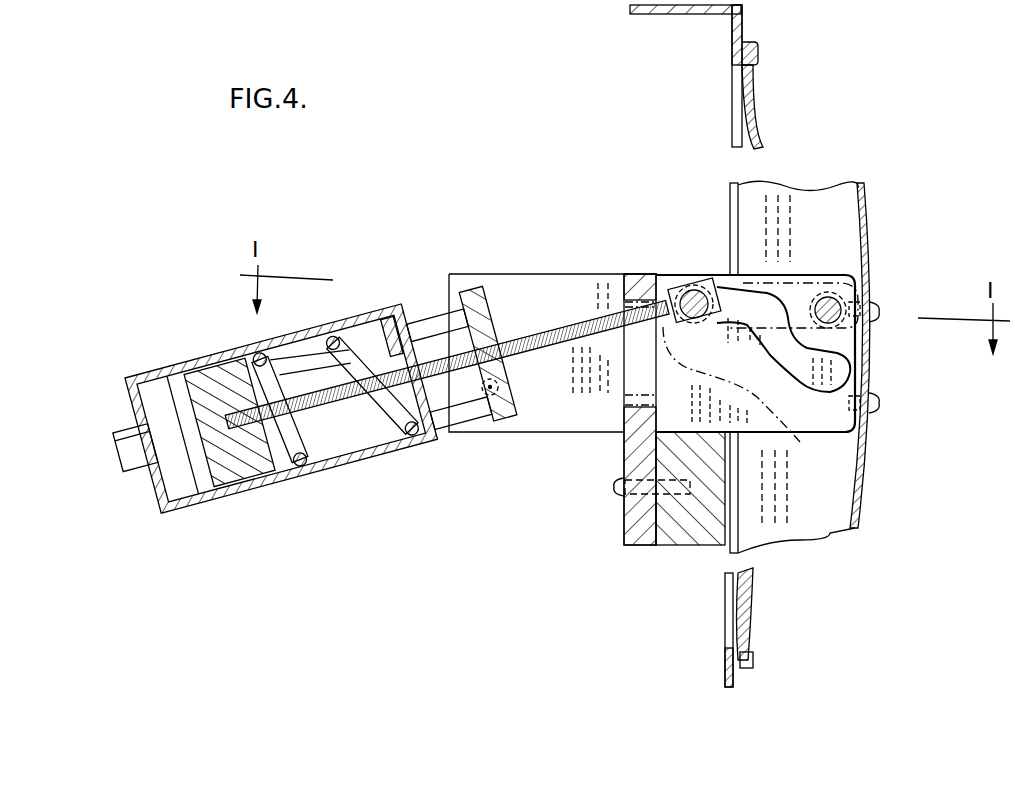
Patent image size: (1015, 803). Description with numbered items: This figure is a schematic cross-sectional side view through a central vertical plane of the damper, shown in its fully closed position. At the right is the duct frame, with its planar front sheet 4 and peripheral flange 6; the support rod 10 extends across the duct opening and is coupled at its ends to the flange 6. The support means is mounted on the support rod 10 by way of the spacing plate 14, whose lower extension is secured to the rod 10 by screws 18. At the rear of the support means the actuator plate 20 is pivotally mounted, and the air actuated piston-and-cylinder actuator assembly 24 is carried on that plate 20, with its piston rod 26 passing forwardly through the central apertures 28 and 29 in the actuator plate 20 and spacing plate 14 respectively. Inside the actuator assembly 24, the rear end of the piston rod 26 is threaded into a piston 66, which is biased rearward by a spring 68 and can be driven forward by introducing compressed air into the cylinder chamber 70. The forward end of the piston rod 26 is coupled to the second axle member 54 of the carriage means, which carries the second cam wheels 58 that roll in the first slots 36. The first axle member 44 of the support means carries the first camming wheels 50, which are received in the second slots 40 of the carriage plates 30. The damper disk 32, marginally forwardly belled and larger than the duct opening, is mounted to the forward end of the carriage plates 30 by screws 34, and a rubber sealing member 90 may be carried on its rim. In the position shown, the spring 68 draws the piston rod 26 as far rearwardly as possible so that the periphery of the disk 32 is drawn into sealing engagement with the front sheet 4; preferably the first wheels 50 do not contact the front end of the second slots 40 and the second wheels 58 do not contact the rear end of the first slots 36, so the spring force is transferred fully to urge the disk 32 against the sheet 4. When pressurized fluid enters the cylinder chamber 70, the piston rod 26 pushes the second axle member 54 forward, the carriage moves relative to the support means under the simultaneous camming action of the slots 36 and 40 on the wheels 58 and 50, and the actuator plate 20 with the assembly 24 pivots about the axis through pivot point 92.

The front sheet 4 is at (750, 44).
The peripheral flange 6 is at (658, 16).
The rubber sealing member 90 is at (760, 52).
The damper disk 32 is at (758, 130).
The carriage plates 30 is at (832, 438).
The piston rod 26 is at (582, 325).
The spacing plate 14 is at (632, 448).
The central aperture 29 is at (632, 383).
The screws 18 is at (628, 487).
The support rod 10 is at (668, 548).
The piston-and-cylinder actuator assembly 24 is at (162, 348).
The cylinder chamber 70 is at (180, 495).
The piston 66 is at (242, 495).
The spring 68 is at (302, 470).
The actuator plate 20 is at (486, 305).
The pivot point 92 is at (500, 390).
The central aperture 28 is at (500, 340).
The second axle member 54 is at (693, 290).
The second cam wheels 58 is at (704, 292).
The second slots 40 is at (775, 285).
The first slots 36 is at (845, 372).
The first camming wheels 50 is at (843, 300).
The first axle member 44 is at (845, 323).
The screws 34 is at (880, 307).